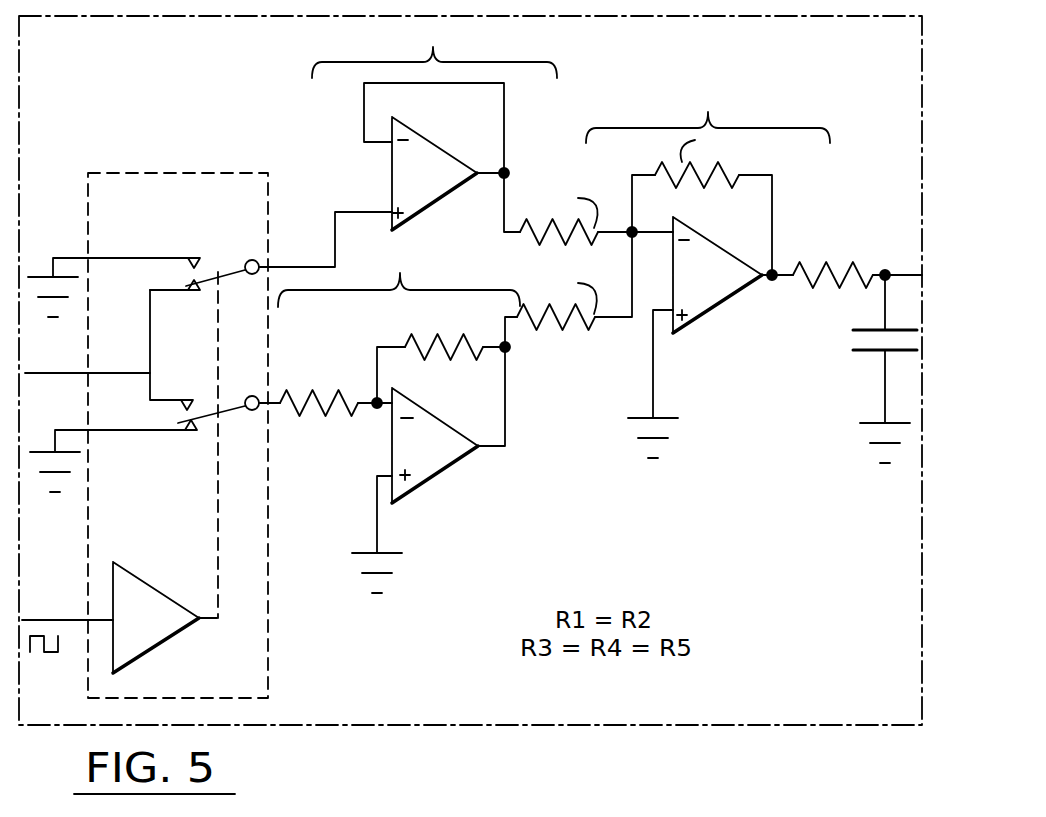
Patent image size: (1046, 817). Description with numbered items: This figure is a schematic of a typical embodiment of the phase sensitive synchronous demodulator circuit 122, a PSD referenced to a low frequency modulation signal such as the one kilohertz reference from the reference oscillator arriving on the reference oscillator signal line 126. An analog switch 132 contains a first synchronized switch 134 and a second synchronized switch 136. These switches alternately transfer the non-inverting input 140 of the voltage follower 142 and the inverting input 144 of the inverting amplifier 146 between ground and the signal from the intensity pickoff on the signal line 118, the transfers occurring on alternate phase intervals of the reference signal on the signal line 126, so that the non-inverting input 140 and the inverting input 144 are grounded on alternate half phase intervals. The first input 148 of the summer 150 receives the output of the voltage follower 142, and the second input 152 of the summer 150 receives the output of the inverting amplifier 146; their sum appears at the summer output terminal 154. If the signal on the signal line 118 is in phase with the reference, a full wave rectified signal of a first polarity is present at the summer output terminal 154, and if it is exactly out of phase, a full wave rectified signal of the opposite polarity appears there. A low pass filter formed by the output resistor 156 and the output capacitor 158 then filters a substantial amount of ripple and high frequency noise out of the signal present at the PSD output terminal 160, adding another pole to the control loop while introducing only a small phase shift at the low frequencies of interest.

The signal line 118 is at (87, 360).
The phase sensitive synchronous demodulator circuit 122 is at (470, 370).
The reference oscillator signal line 126 is at (119, 617).
The analog switch 132 is at (160, 198).
The first synchronized switch 134 is at (230, 266).
The second synchronized switch 136 is at (210, 400).
The non-inverting input 140 is at (268, 267).
The voltage follower 142 is at (434, 125).
The inverting input 144 is at (280, 408).
The inverting amplifier 146 is at (399, 417).
The first input of summer 148 is at (512, 226).
The summer 150 is at (673, 270).
The second input of summer 152 is at (515, 320).
The summer output terminal 154 is at (773, 281).
The resistor R6 156 is at (855, 262).
The capacitor C1 158 is at (865, 353).
The PSD output terminal 160 is at (897, 260).